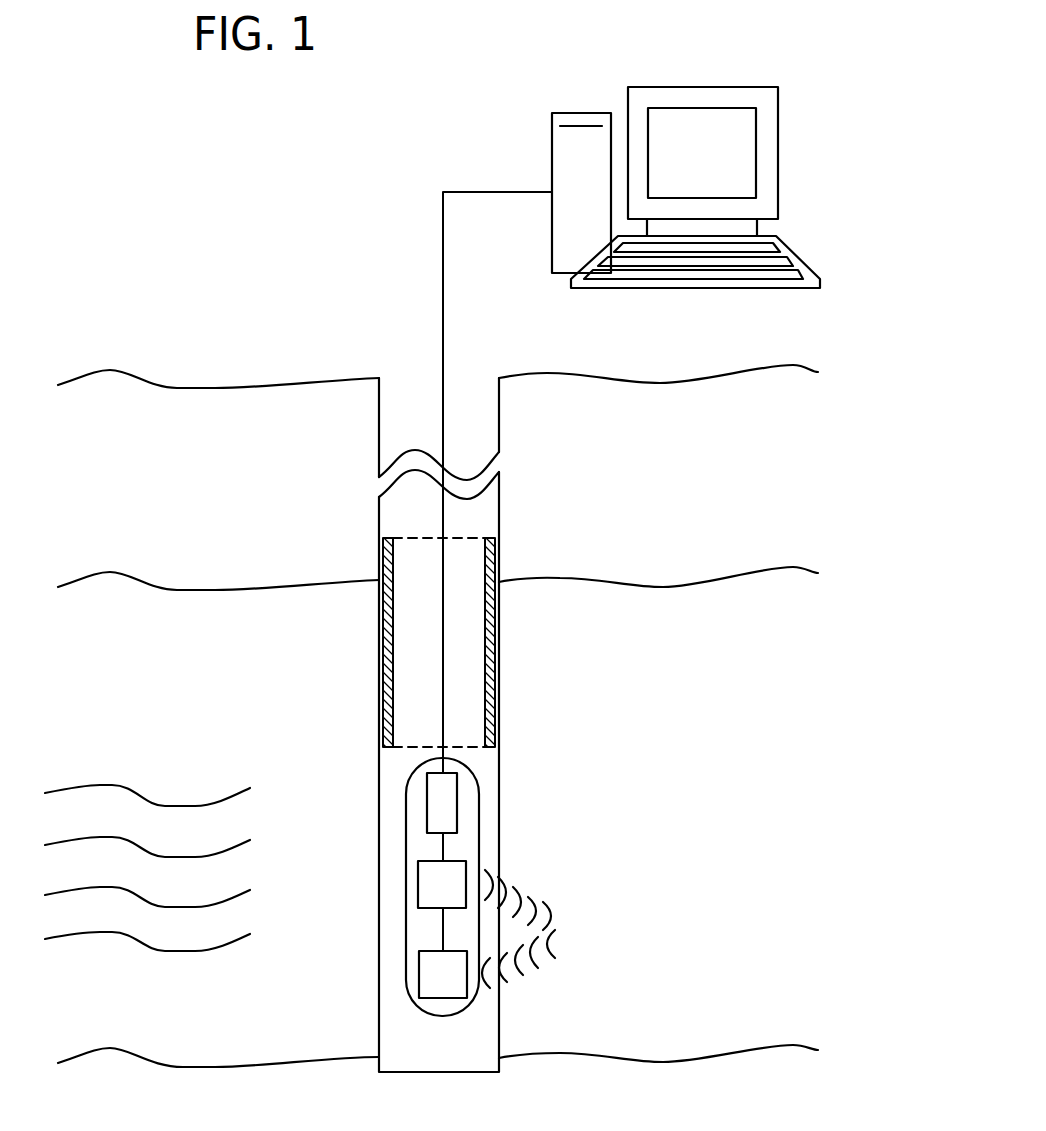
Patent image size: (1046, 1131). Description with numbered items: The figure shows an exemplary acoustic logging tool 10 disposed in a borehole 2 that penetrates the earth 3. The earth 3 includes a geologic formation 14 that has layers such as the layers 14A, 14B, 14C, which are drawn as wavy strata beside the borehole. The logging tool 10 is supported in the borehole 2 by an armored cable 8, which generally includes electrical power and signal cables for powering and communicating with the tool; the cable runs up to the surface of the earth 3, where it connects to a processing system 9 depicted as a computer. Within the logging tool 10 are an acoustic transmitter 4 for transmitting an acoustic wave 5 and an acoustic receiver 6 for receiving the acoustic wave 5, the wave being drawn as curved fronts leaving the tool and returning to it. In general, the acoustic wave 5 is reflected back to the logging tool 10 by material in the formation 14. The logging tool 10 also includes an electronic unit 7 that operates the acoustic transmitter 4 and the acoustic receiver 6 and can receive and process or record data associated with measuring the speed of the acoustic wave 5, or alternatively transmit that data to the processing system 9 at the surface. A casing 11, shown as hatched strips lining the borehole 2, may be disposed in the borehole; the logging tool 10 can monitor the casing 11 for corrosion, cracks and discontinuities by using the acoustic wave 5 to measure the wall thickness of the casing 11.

The borehole 2 is at (499, 415).
The earth 3 is at (699, 458).
The acoustic transmitter 4 is at (435, 873).
The acoustic wave 5 is at (542, 948).
The acoustic receiver 6 is at (435, 973).
The electronic unit 7 is at (435, 792).
The armored cable 8 is at (443, 527).
The processing system 9 is at (552, 145).
The acoustic logging tool 10 is at (478, 790).
The casing 11 is at (490, 660).
The geologic formation 14 is at (713, 641).
The layer 14A is at (115, 825).
The layer 14B is at (115, 873).
The layer 14C is at (115, 923).